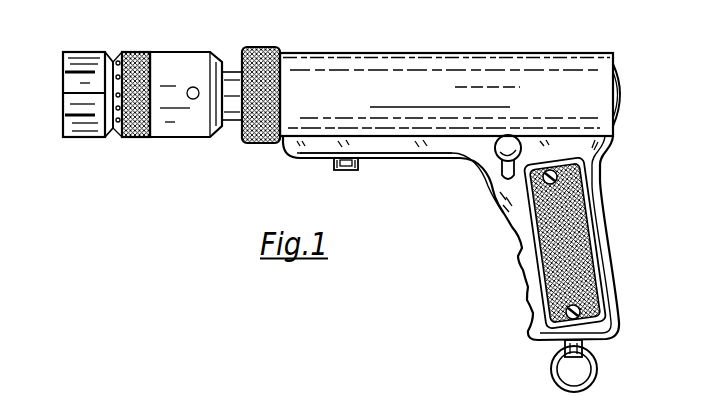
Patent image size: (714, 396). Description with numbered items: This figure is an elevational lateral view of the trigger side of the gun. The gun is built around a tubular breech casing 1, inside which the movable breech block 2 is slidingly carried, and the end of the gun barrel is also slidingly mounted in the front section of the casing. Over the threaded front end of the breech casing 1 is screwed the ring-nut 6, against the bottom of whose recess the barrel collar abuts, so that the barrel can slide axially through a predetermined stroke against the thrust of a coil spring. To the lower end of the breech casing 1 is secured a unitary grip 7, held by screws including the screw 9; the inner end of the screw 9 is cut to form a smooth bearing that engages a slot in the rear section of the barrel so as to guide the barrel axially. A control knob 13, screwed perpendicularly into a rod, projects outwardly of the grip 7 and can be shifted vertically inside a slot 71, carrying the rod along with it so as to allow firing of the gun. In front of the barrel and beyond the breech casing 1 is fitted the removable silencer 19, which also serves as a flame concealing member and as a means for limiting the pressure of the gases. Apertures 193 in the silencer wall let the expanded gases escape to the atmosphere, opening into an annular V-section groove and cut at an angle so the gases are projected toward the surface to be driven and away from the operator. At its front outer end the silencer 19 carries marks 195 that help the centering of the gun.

The tubular breech casing 1 is at (533, 71).
The movable breech block 2 is at (617, 93).
The ring-nut 6 is at (248, 143).
The unitary grip 7 is at (528, 331).
The slot 71 is at (493, 190).
The screw 9 is at (340, 170).
The control knob 13 is at (504, 150).
The removable silencer 19 is at (185, 118).
The apertures 193 is at (129, 52).
The marks 195 is at (85, 98).